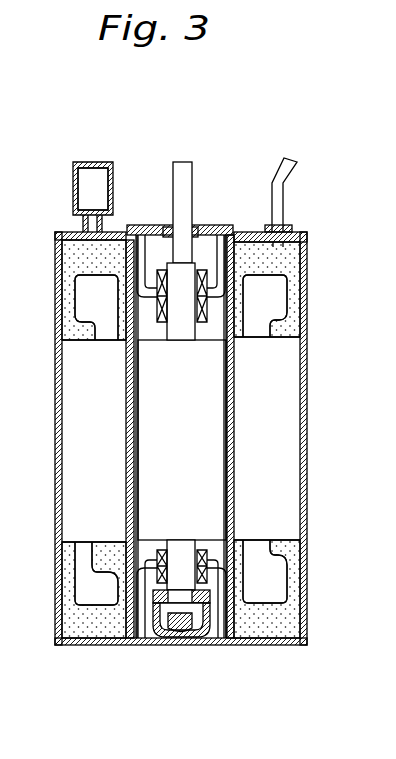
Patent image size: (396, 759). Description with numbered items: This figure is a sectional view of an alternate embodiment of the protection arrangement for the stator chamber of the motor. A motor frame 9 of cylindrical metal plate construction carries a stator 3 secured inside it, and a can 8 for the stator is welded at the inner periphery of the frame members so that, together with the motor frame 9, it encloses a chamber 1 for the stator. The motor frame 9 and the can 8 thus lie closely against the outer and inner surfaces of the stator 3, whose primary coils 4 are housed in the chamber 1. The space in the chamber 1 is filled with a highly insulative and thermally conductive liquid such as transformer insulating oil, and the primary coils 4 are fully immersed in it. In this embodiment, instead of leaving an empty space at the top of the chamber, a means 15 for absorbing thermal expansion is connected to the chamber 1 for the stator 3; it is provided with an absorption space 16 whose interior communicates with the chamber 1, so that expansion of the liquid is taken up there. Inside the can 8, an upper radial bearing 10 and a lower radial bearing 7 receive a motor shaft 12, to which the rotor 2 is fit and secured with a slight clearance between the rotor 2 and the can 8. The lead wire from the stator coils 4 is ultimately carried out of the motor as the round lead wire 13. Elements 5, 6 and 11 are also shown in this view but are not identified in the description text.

The chamber for the stator 1 is at (300, 298).
The rotor 2 is at (218, 410).
The stator 3 is at (300, 463).
The primary coils 4 is at (280, 578).
The lower bushing body 5 is at (212, 645).
The bushing plate 6 is at (157, 647).
The lower radial bearing 7 is at (157, 578).
The can for the stator 8 is at (127, 573).
The motor frame 9 is at (55, 330).
The upper radial bearing 10 is at (156, 322).
The top plate 11 is at (163, 227).
The motor shaft 12 is at (193, 176).
The round lead wire 13 is at (290, 170).
The means for absorbing thermal expansion 15 is at (73, 188).
The absorption space 16 is at (95, 168).